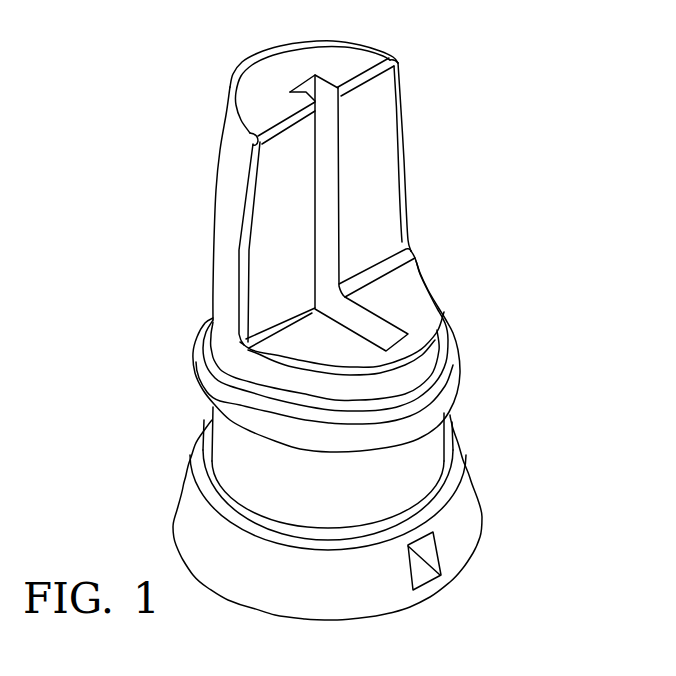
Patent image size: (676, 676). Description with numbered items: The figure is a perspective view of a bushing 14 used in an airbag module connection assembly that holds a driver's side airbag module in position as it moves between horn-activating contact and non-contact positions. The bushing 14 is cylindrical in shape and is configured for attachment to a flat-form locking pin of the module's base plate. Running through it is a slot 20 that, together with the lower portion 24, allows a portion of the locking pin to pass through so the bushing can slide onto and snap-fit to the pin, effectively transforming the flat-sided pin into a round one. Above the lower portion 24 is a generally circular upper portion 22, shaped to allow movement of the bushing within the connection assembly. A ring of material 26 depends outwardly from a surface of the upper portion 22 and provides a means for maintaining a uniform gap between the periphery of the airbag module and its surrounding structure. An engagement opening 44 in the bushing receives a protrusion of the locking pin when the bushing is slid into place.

The bushing 14 is at (520, 122).
The slot 20 is at (358, 306).
The upper portion 22 is at (455, 452).
The lower portion 24 is at (404, 116).
The ring of material 26 is at (455, 338).
The engagement opening 44 is at (423, 570).